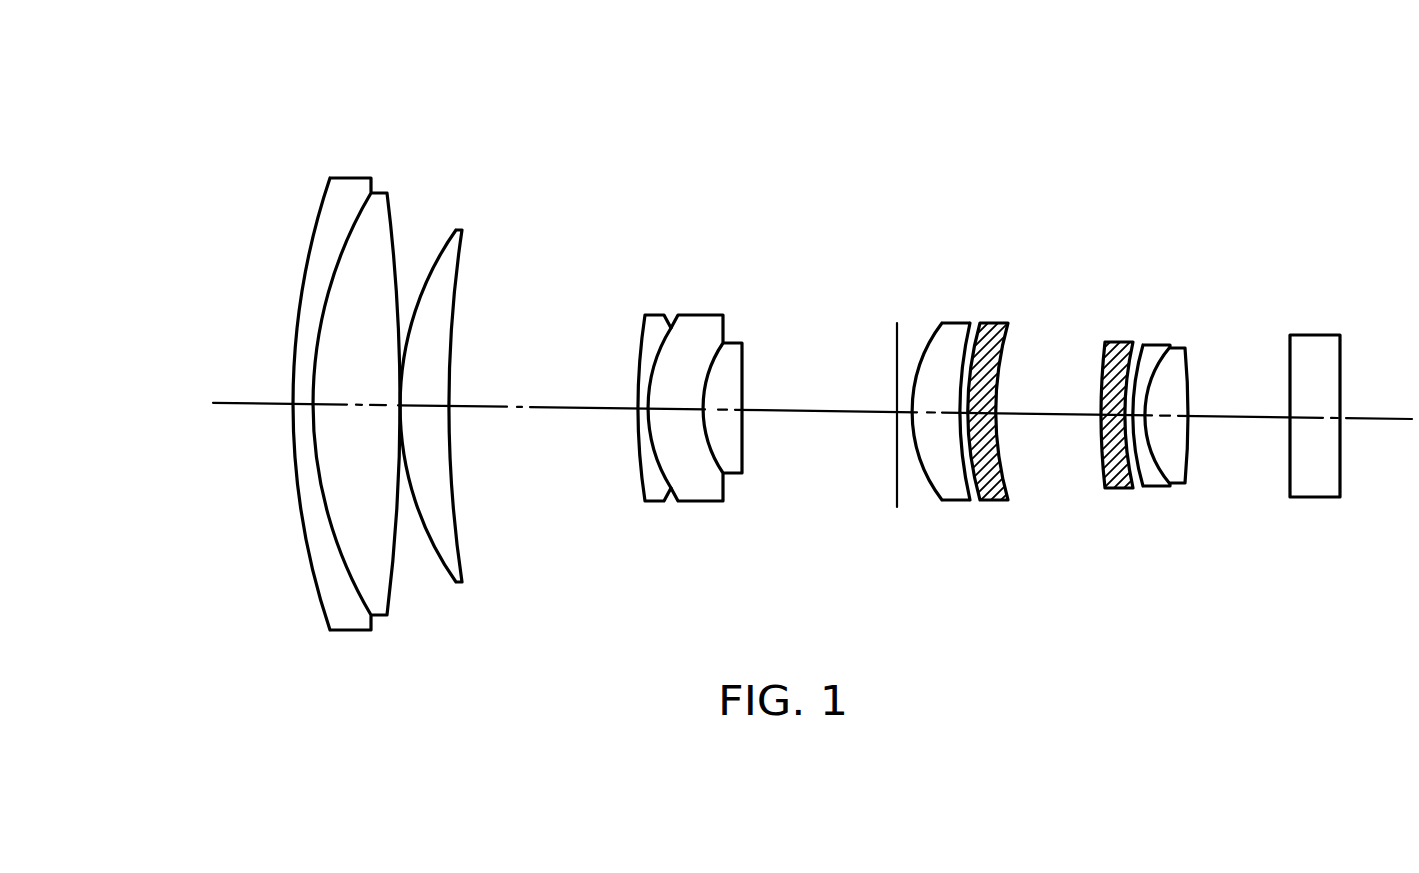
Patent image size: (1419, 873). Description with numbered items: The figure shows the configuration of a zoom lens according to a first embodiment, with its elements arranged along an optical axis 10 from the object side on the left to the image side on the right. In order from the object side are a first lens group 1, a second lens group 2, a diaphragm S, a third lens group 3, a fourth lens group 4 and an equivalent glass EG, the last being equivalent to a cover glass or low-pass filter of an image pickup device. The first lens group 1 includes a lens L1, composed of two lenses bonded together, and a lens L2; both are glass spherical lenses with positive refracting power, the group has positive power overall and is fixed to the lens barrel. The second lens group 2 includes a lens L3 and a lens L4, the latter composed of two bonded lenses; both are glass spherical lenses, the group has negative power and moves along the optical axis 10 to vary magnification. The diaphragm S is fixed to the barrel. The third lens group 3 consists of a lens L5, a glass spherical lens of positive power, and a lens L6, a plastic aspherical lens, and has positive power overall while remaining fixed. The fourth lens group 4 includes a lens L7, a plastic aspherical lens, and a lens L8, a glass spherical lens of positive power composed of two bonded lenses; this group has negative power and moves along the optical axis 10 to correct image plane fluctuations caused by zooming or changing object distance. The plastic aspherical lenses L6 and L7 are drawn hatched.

The optical axis 10 is at (233, 402).
The first lens group 1 is at (458, 85).
The second lens group 2 is at (733, 195).
The third lens group 3 is at (1027, 197).
The fourth lens group 4 is at (1198, 235).
The lens L1 is at (368, 228).
The lens L2 is at (451, 237).
The lens L3 is at (657, 325).
The lens L4 is at (703, 327).
The lens L5 is at (948, 337).
The lens L6 is at (997, 325).
The lens L7 is at (1122, 345).
The lens L8 is at (1178, 360).
The diaphragm S is at (895, 318).
The equivalent glass EG is at (1313, 358).